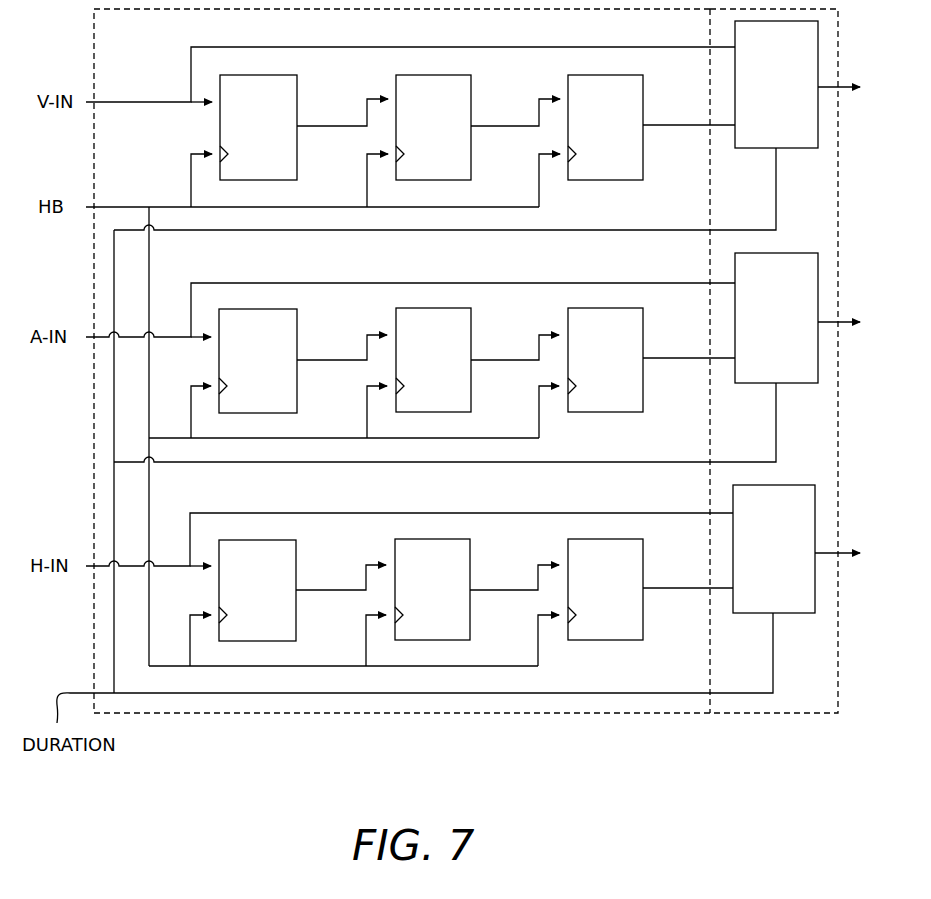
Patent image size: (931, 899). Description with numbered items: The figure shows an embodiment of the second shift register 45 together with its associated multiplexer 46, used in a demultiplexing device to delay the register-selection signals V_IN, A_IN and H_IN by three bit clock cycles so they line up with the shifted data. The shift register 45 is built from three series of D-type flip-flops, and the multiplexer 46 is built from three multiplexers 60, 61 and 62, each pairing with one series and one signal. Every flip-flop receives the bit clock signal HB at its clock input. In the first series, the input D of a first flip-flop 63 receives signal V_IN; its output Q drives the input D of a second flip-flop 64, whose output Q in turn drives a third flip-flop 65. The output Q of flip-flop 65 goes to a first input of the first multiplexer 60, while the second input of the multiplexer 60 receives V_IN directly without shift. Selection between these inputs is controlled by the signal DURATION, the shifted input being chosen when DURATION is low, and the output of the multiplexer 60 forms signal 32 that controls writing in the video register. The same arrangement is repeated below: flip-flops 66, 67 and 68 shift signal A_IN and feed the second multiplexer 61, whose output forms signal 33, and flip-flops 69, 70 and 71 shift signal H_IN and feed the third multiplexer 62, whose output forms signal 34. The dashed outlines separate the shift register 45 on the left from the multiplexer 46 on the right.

The signal 32 is at (846, 84).
The signal 33 is at (846, 319).
The signal 34 is at (846, 550).
The second shift register 45 is at (484, 714).
The multiplexer 46 is at (776, 714).
The first multiplexer 60 is at (800, 150).
The second multiplexer 61 is at (800, 385).
The third multiplexer 62 is at (798, 615).
The first flip-flop 63 is at (299, 86).
The second flip-flop 64 is at (473, 86).
The third flip-flop 65 is at (645, 86).
The flip-flop 66 is at (299, 320).
The flip-flop 67 is at (473, 320).
The flip-flop 68 is at (645, 320).
The flip-flop 69 is at (298, 551).
The flip-flop 70 is at (472, 551).
The flip-flop 71 is at (645, 551).